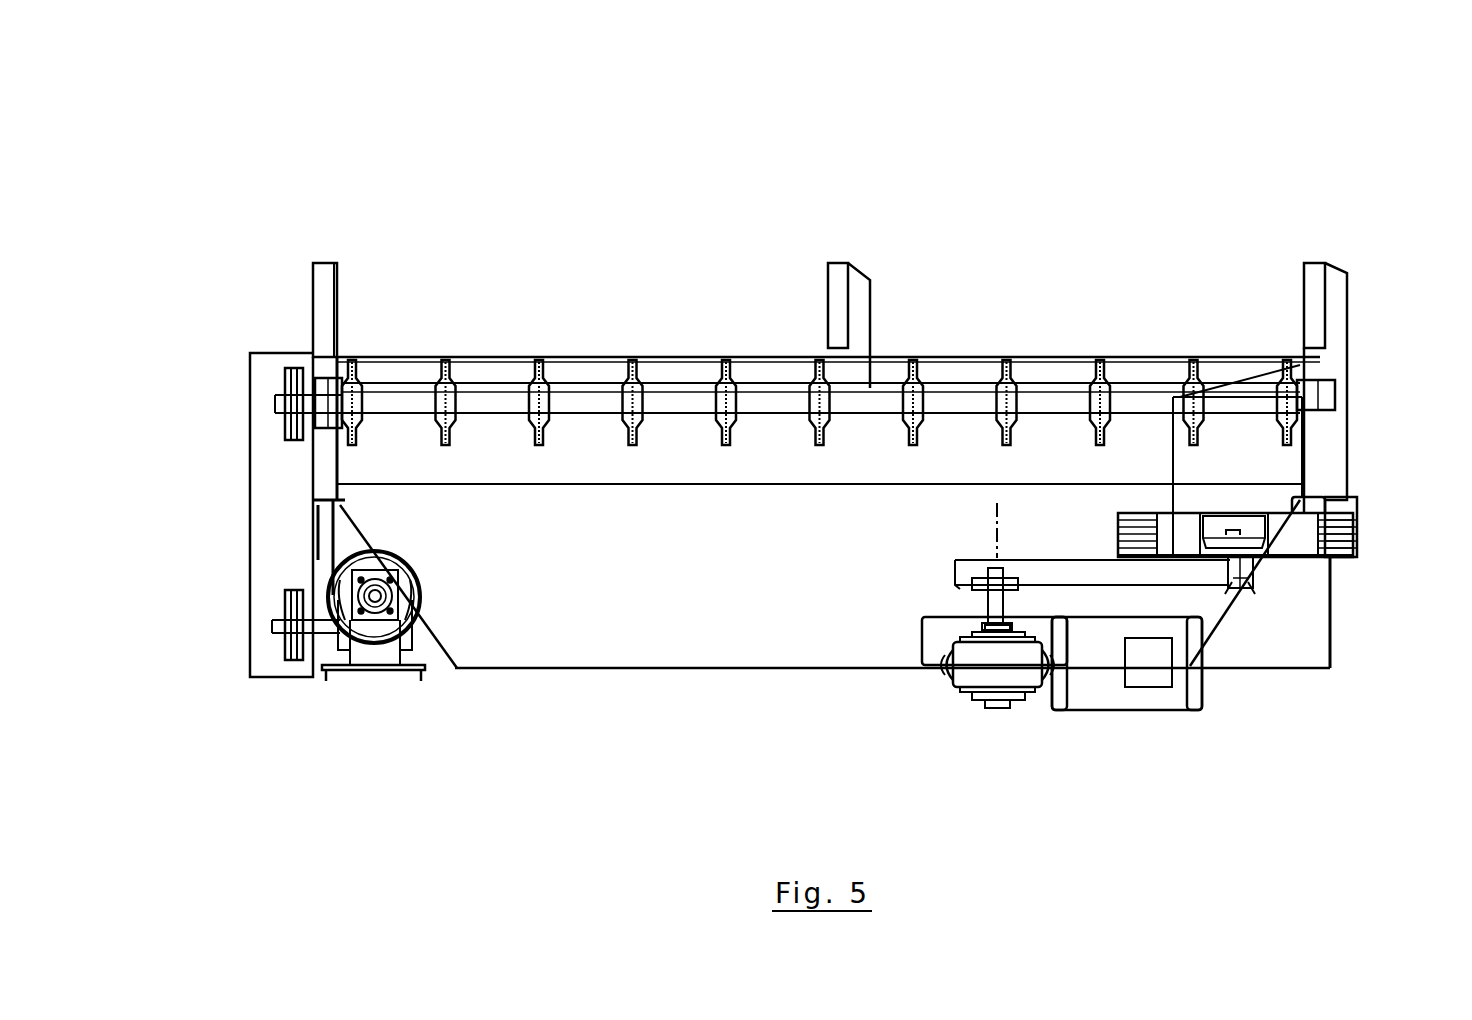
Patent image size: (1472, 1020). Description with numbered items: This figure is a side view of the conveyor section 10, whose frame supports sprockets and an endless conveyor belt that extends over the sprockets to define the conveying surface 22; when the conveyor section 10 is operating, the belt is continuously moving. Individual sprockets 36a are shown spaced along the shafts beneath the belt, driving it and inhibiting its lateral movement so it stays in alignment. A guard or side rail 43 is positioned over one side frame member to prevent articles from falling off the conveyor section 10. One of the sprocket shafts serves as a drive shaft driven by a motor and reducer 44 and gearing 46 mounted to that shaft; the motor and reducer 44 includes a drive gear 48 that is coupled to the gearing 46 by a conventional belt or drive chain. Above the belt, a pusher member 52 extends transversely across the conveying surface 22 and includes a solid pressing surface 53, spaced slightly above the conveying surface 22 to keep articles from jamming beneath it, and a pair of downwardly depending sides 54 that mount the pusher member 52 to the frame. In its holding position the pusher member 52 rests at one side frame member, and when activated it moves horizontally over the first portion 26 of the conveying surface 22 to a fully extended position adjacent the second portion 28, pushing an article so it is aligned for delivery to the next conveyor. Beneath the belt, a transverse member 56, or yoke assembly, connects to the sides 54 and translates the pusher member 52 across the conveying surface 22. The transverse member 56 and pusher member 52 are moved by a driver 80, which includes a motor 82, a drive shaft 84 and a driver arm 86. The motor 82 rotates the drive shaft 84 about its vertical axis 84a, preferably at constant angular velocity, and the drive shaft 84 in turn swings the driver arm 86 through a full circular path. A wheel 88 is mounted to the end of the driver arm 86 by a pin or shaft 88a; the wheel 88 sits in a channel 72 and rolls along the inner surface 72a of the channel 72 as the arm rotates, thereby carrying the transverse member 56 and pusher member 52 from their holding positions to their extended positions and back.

The conveyor section 10 is at (1027, 160).
The conveying surface 22 is at (965, 357).
The first portion 26 is at (1070, 357).
The second portion 28 is at (587, 360).
The bracket 36a is at (395, 392).
The side rail 43 is at (313, 290).
The motor and reducer 44 is at (370, 700).
The gearing 46 is at (285, 380).
The drive gear 48 is at (288, 650).
The pusher member 52 is at (1347, 315).
The pressing surface 53 is at (825, 275).
The sides 54 is at (1280, 466).
The transverse member 56 is at (1385, 519).
The channel 72 is at (1197, 535).
The inner surface 72a is at (1265, 530).
The driver 80 is at (1222, 706).
The motor 82 is at (1108, 712).
The drive shaft 84 is at (982, 601).
The vertical axis 84a is at (990, 513).
The driver arm 86 is at (1200, 585).
The wheel 88 is at (1313, 560).
The shaft 88a is at (1257, 580).